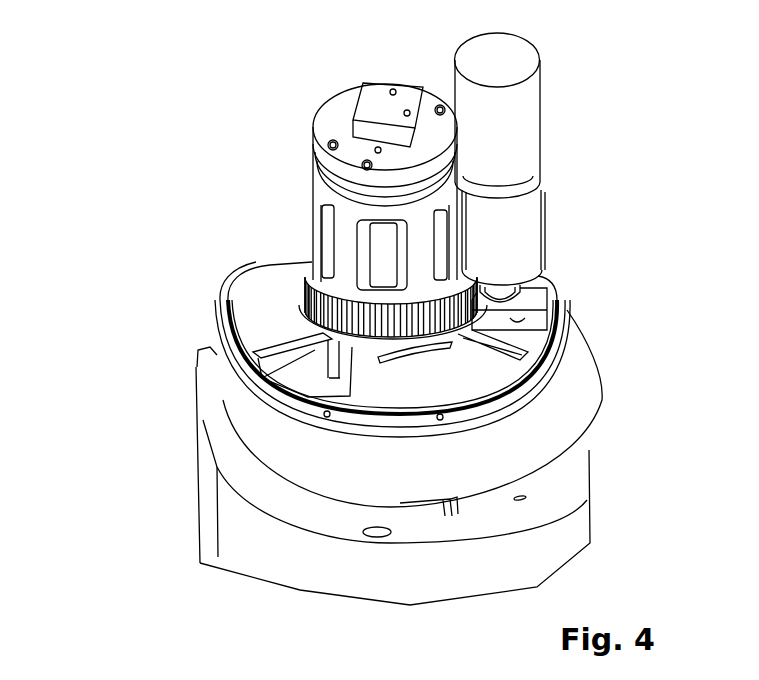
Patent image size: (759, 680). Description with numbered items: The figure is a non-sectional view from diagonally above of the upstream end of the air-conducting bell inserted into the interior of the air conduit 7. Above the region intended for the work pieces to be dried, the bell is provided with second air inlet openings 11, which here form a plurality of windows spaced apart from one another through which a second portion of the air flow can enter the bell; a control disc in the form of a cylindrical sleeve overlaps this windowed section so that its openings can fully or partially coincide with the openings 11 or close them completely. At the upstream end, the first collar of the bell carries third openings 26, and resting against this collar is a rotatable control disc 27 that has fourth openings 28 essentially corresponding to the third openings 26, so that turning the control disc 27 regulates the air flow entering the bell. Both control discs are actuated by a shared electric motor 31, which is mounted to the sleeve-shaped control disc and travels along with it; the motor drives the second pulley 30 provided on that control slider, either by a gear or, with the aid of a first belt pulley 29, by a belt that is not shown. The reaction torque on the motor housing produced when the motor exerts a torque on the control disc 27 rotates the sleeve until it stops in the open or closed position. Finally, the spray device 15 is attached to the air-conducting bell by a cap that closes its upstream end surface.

The air conduit 7 is at (567, 527).
The second air inlet openings 11 is at (443, 240).
The spray device 15 is at (385, 113).
The third openings 26 is at (297, 367).
The control disc 27 is at (357, 397).
The fourth openings 28 is at (300, 350).
The first belt pulley 29 is at (522, 327).
The second pulley 30 is at (310, 297).
The electric motor 31 is at (531, 134).